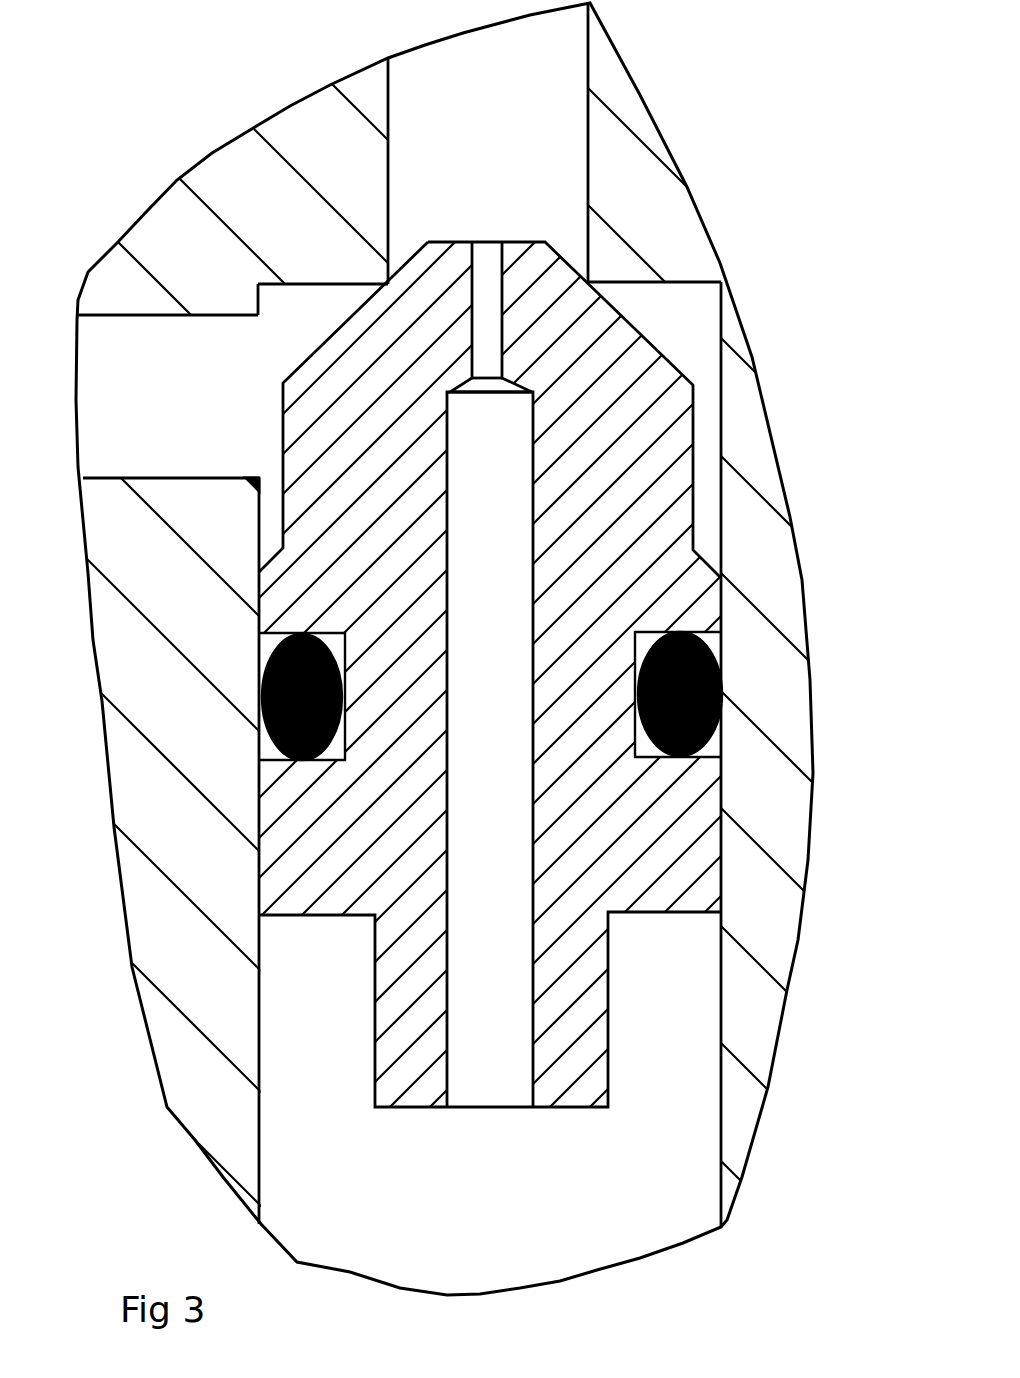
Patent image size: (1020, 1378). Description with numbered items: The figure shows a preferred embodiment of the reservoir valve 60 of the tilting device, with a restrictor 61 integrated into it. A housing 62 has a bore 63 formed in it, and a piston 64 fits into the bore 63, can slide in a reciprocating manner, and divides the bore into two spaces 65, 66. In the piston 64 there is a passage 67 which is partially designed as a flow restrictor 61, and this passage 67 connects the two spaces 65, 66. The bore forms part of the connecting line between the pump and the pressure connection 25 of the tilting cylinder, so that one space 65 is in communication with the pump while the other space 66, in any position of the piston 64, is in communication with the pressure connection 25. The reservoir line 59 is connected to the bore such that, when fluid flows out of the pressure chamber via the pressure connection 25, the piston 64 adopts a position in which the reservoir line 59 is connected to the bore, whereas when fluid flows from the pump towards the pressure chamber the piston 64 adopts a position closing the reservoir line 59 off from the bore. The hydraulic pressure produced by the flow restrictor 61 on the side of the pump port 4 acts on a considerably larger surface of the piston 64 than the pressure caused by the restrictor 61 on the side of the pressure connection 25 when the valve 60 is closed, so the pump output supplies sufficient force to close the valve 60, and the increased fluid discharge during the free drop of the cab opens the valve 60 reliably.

The pump port 4 is at (490, 1272).
The pressure connection 25 is at (488, 63).
The reservoir line 59 is at (150, 413).
The reservoir valve 60 is at (830, 832).
The flow restrictor 61 is at (483, 307).
The housing 62 is at (603, 168).
The bore 63 is at (722, 421).
The piston 64 is at (667, 530).
The space 65 is at (638, 1056).
The space 66 is at (660, 326).
The passage 67 is at (470, 756).